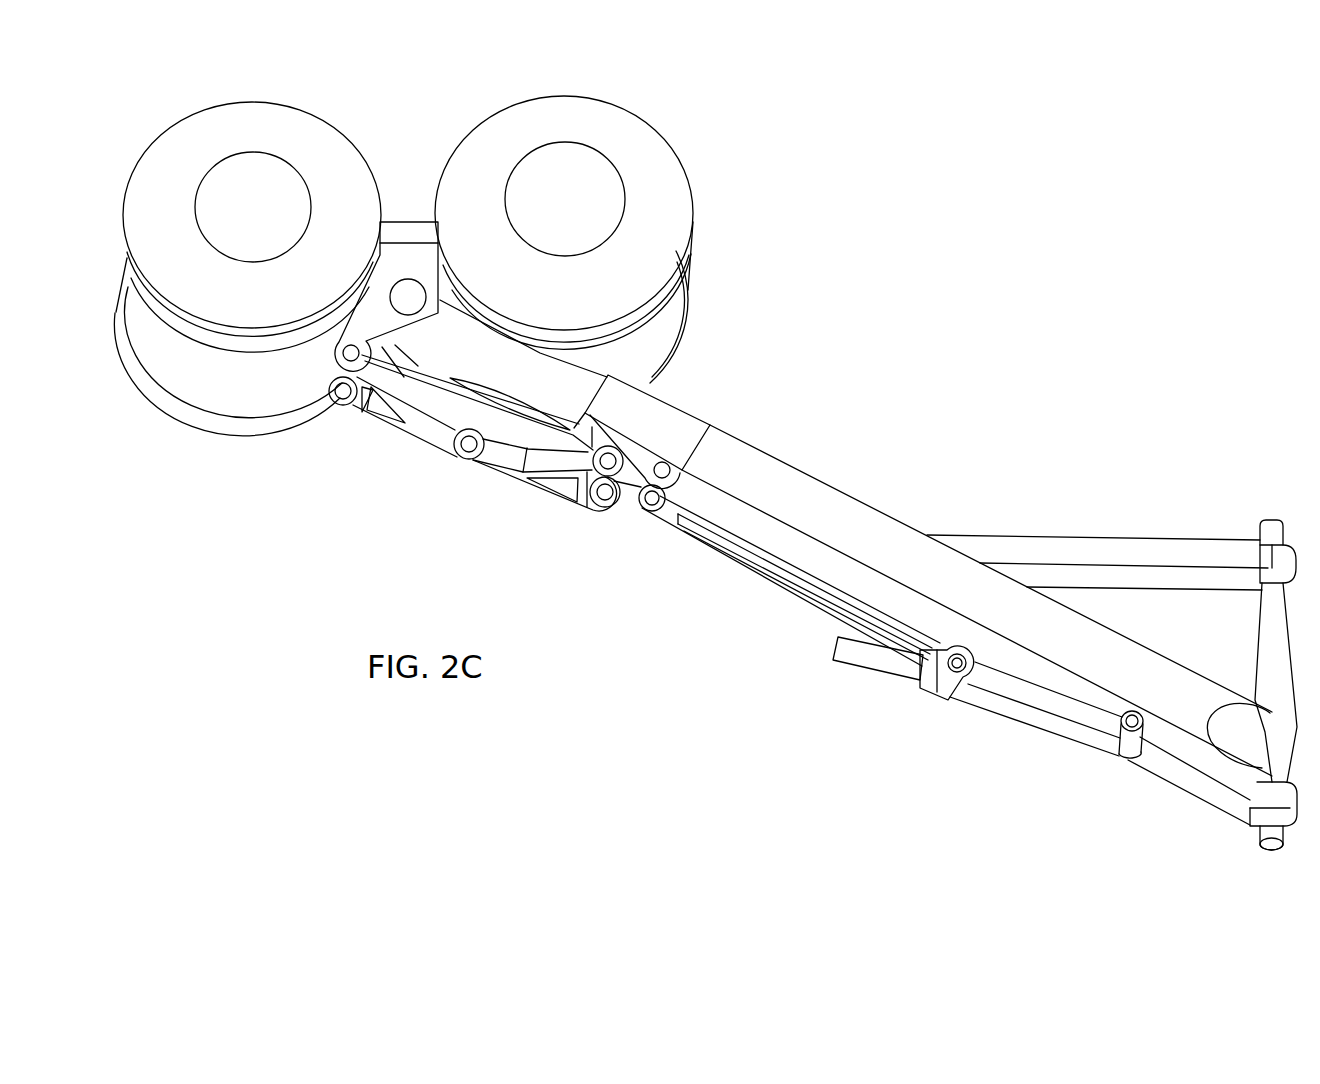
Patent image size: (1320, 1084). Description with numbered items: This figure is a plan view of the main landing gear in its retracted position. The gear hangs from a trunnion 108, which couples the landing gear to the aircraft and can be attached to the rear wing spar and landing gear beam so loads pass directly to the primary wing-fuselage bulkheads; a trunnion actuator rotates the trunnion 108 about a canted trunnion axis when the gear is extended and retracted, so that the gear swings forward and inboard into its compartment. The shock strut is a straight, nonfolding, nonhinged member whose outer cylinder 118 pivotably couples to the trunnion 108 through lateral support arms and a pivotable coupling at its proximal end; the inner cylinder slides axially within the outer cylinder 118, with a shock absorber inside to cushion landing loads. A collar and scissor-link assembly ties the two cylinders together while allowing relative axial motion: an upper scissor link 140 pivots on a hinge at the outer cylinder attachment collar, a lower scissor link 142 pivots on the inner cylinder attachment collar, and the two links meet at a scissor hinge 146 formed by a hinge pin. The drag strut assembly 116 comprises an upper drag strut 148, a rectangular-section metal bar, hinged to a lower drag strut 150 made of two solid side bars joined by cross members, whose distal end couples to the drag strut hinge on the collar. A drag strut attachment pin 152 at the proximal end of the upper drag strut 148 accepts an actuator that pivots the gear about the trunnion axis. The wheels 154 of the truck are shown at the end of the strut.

The trunnion 108 is at (1267, 578).
The drag strut assembly 116 is at (737, 567).
The outer cylinder 118 is at (880, 510).
The upper scissor link 140 is at (533, 487).
The lower scissor link 142 is at (377, 422).
The scissor hinge 146 is at (457, 457).
The upper drag strut 148 is at (1060, 732).
The lower drag strut 150 is at (808, 605).
The drag strut attachment pin 152 is at (860, 662).
The wheel 154 is at (697, 242).